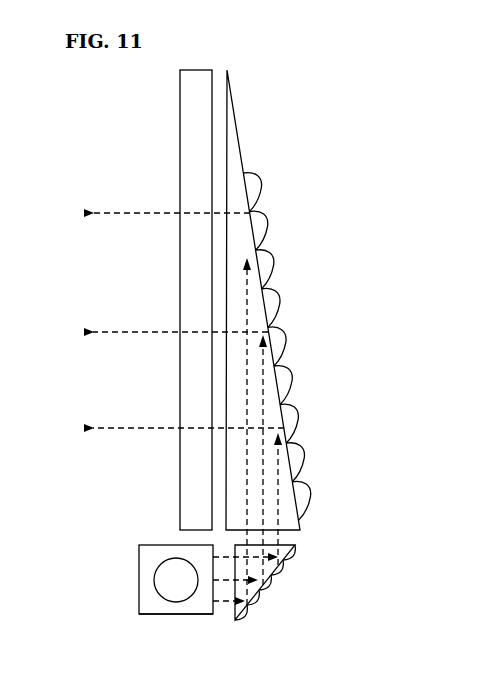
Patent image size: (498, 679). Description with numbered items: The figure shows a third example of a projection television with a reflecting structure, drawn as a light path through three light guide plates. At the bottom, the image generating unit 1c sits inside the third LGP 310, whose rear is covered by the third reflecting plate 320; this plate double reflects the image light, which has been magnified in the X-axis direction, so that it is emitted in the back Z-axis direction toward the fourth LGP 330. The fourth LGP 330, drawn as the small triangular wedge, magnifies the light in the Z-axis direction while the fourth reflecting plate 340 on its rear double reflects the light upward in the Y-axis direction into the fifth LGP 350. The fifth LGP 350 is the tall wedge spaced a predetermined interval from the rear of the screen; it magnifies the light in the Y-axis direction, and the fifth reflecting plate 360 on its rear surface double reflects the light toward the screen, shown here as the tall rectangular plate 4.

The display panel 4 is at (193, 122).
The fifth LGP 350 is at (232, 172).
The fifth reflecting plate 360 is at (268, 262).
The third reflecting plate 320 is at (139, 557).
The image generating unit 1c is at (160, 581).
The third LGP 310 is at (176, 614).
The fourth reflecting plate 340 is at (278, 570).
The fourth LGP 330 is at (262, 596).